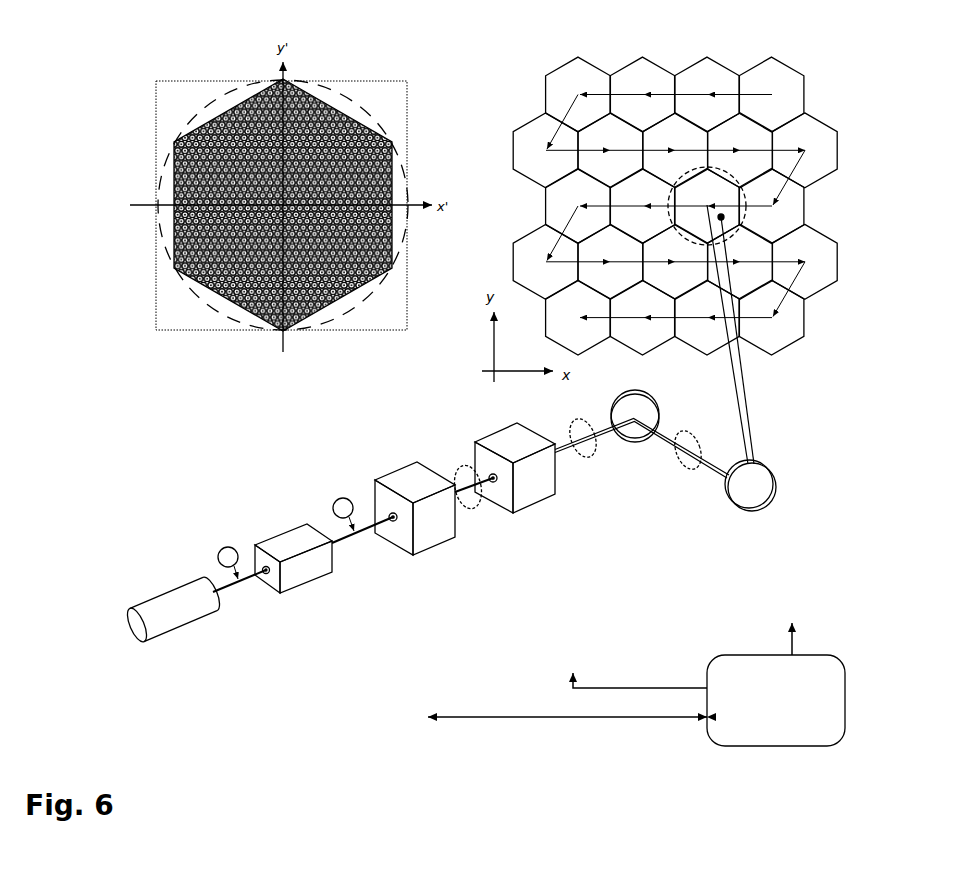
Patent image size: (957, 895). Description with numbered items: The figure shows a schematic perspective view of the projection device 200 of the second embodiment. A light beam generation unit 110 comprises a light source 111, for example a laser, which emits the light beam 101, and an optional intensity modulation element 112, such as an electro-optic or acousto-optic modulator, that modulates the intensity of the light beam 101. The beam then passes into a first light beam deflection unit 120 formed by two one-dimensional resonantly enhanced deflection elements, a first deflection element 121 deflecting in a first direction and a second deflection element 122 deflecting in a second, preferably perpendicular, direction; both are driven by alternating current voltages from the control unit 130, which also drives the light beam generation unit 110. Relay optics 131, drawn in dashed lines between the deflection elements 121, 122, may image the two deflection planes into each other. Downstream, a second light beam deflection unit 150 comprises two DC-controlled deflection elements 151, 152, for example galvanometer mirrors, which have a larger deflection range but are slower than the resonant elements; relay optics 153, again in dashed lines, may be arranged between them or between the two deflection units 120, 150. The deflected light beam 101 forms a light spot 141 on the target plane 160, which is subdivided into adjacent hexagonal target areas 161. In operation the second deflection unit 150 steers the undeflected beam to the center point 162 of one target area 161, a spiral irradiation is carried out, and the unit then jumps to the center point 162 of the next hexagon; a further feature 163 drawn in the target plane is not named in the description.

The light beam 101 is at (243, 581).
The light beam generation unit 110 is at (308, 595).
The light source 111 is at (202, 617).
The intensity modulation element 112 is at (297, 572).
The first light beam deflection unit 120 is at (487, 519).
The first deflection element 121 is at (443, 542).
The second deflection element 122 is at (520, 483).
The control unit 130 is at (636, 684).
The relay optics 131 is at (470, 501).
The light spot 141 is at (303, 92).
The second light beam deflection unit 150 is at (704, 390).
The first deflection element of second deflection unit 151 is at (638, 394).
The second deflection element of second deflection unit 152 is at (773, 478).
The relay optics 153 is at (690, 470).
The target plane 160 is at (790, 69).
The target area 161 is at (317, 100).
The center point 162 is at (774, 95).
The scan direction arrow 163 is at (623, 93).
The projection device 200 is at (229, 494).